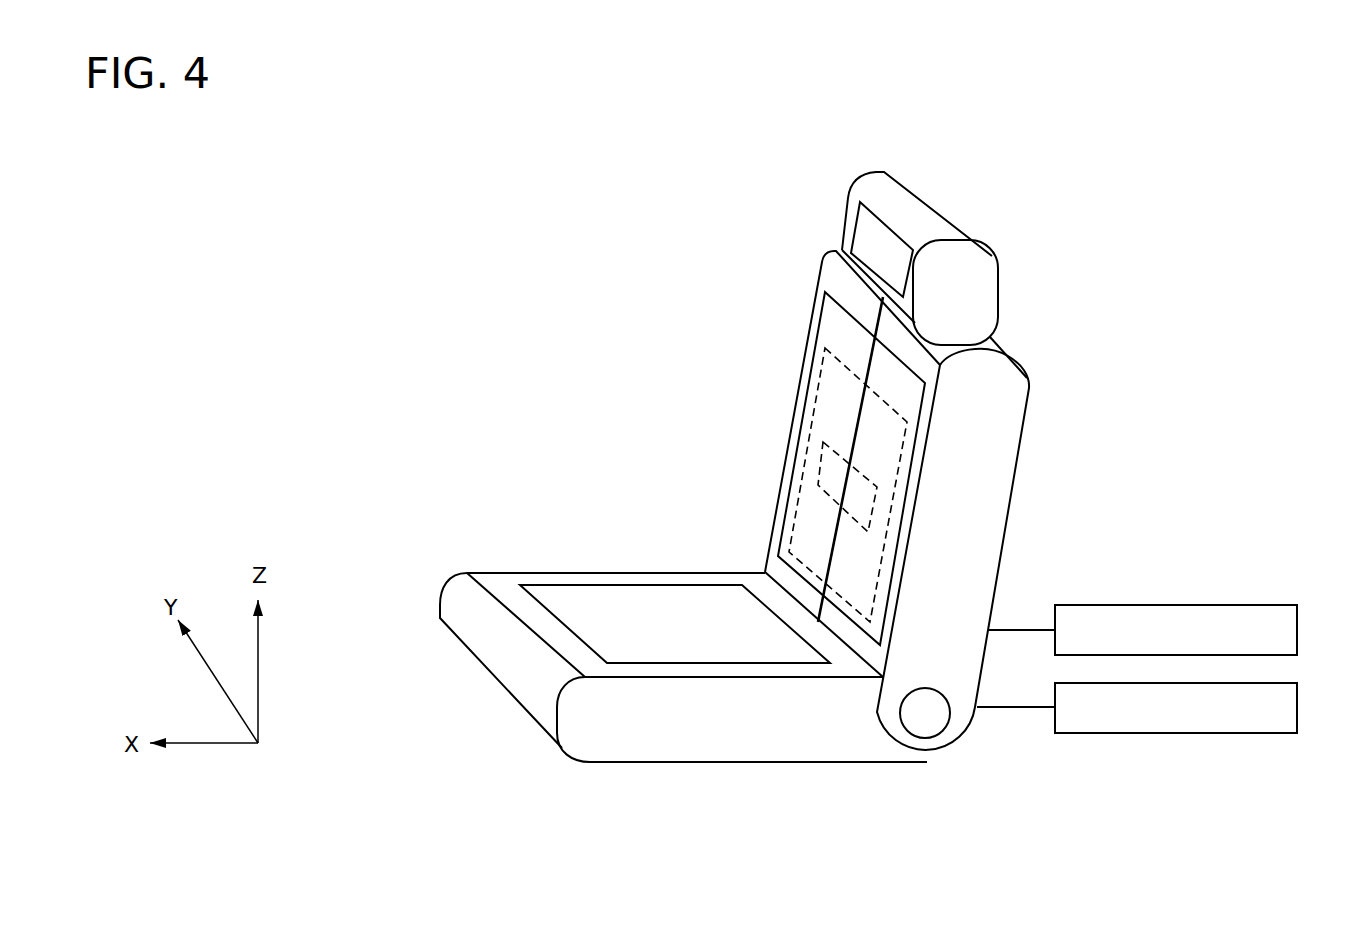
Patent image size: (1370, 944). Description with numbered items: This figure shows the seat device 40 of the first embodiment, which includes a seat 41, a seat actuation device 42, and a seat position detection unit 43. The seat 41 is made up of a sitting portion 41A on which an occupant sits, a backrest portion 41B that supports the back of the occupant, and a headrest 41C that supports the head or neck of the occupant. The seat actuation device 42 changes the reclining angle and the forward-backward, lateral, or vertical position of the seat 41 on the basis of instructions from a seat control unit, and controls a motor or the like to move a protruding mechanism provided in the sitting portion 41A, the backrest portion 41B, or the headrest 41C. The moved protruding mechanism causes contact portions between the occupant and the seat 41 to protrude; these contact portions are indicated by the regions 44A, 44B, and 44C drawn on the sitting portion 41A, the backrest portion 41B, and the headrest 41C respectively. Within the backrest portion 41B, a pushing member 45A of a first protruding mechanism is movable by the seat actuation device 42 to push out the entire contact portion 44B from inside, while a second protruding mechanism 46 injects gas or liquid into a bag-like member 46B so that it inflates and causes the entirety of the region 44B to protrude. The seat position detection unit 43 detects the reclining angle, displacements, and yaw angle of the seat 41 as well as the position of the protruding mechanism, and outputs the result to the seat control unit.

The seat device 40 is at (1147, 169).
The seat 41 is at (632, 354).
The sitting portion 41A is at (757, 763).
The backrest portion 41B is at (1017, 466).
The headrest 41C is at (998, 300).
The seat actuation device 42 is at (1297, 630).
The seat position detection unit 43 is at (1297, 708).
The region 44A is at (612, 614).
The contact portion 44B is at (840, 331).
The region 44C is at (880, 246).
The pushing member 45A is at (821, 468).
The second protruding mechanism 46 is at (815, 535).
The bag-like member 46B is at (902, 569).